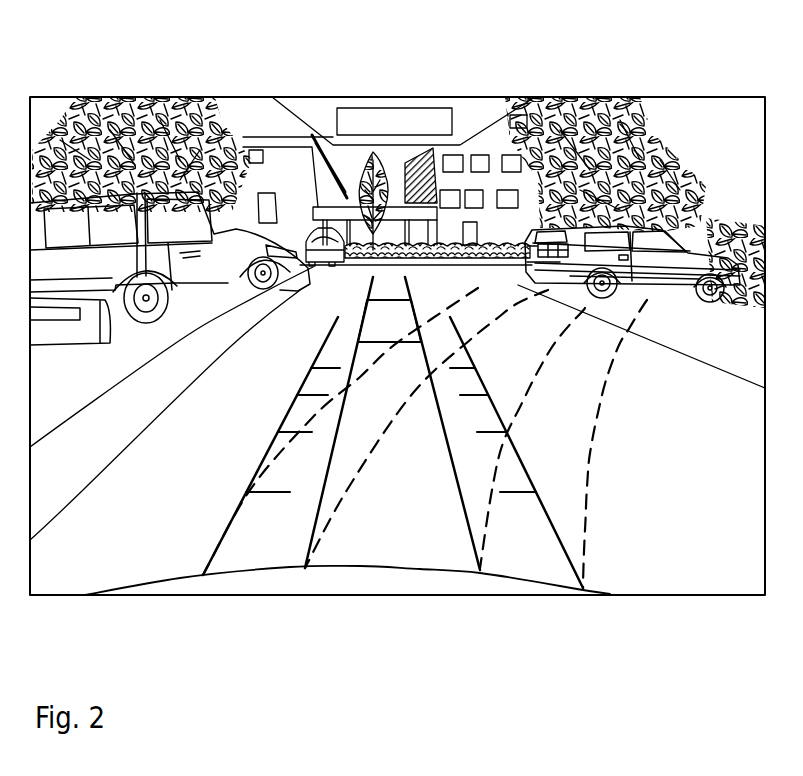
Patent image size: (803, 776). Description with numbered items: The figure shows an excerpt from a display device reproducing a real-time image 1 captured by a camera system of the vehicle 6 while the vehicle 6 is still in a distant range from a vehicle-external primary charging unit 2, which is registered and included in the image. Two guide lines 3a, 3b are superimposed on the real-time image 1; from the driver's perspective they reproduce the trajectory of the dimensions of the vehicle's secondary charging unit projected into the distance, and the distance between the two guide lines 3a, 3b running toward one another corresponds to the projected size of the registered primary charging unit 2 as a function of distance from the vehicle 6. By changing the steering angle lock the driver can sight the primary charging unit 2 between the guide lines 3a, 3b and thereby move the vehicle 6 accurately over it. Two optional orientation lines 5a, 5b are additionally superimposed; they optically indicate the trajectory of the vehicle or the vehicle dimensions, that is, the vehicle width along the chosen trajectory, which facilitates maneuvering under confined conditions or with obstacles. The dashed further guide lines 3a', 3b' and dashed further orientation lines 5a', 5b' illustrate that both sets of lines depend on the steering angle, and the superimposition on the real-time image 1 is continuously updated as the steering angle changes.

The real-time image 1 is at (57, 97).
The primary charging unit 2 is at (378, 325).
The guide line 3a is at (339, 422).
The guide line 3b is at (442, 422).
The further guide line 3a' is at (426, 419).
The further guide line 3b' is at (545, 438).
The orientation line 5a is at (271, 446).
The orientation line 5b is at (516, 452).
The further orientation line 5a' is at (358, 397).
The further orientation line 5b' is at (635, 444).
The vehicle 6 is at (182, 587).